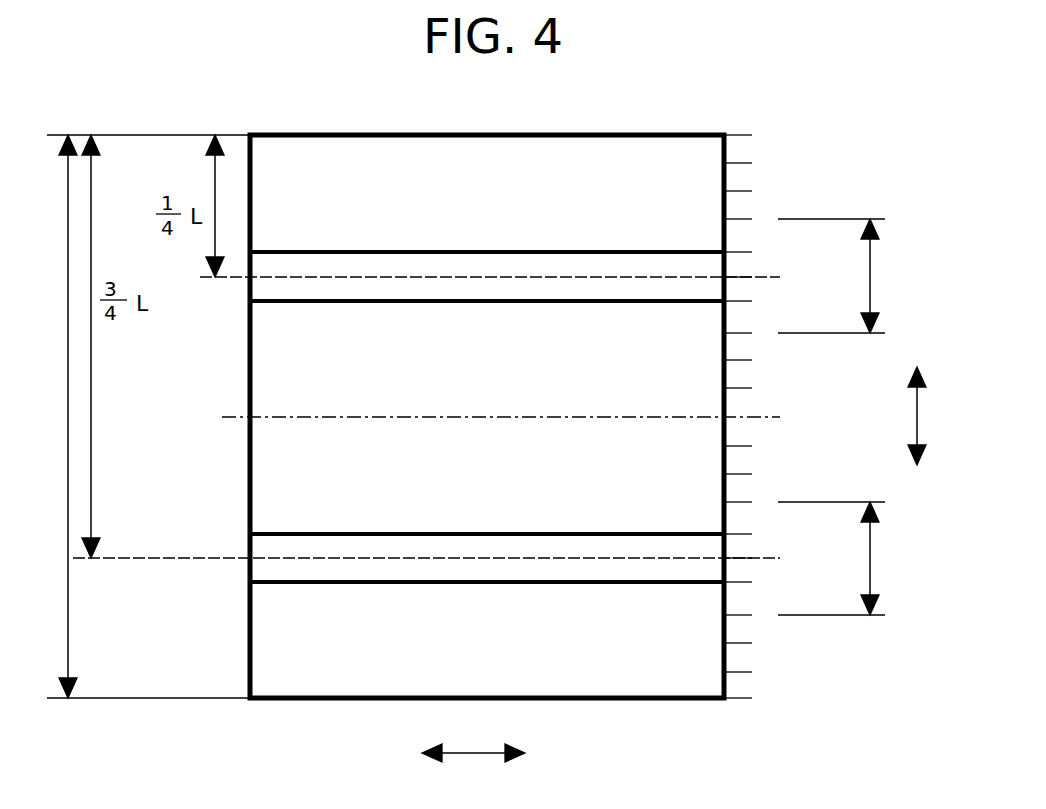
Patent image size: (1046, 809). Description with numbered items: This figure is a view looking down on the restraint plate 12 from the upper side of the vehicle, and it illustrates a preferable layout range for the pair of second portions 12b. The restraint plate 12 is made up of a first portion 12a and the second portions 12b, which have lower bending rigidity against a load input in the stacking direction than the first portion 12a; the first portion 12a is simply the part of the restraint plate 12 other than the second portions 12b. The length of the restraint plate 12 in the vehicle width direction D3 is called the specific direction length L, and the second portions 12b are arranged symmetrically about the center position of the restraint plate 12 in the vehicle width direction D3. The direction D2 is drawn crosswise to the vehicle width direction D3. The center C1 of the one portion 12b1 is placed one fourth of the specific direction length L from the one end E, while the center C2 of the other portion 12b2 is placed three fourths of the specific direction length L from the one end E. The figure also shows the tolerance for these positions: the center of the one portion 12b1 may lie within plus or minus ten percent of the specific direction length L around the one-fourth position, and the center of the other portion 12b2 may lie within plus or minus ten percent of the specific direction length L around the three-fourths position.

The restraint plate 12 is at (608, 118).
The first portion 12a is at (278, 452).
The second portions 12b is at (173, 330).
The one portion 12b1 is at (286, 290).
The other portion 12b2 is at (287, 545).
The one end E is at (250, 136).
The specific direction length L is at (61, 416).
The center of one portion C1 is at (862, 276).
The center of the other portion C2 is at (862, 558).
The direction D2 is at (473, 743).
The vehicle width direction D3 is at (879, 416).